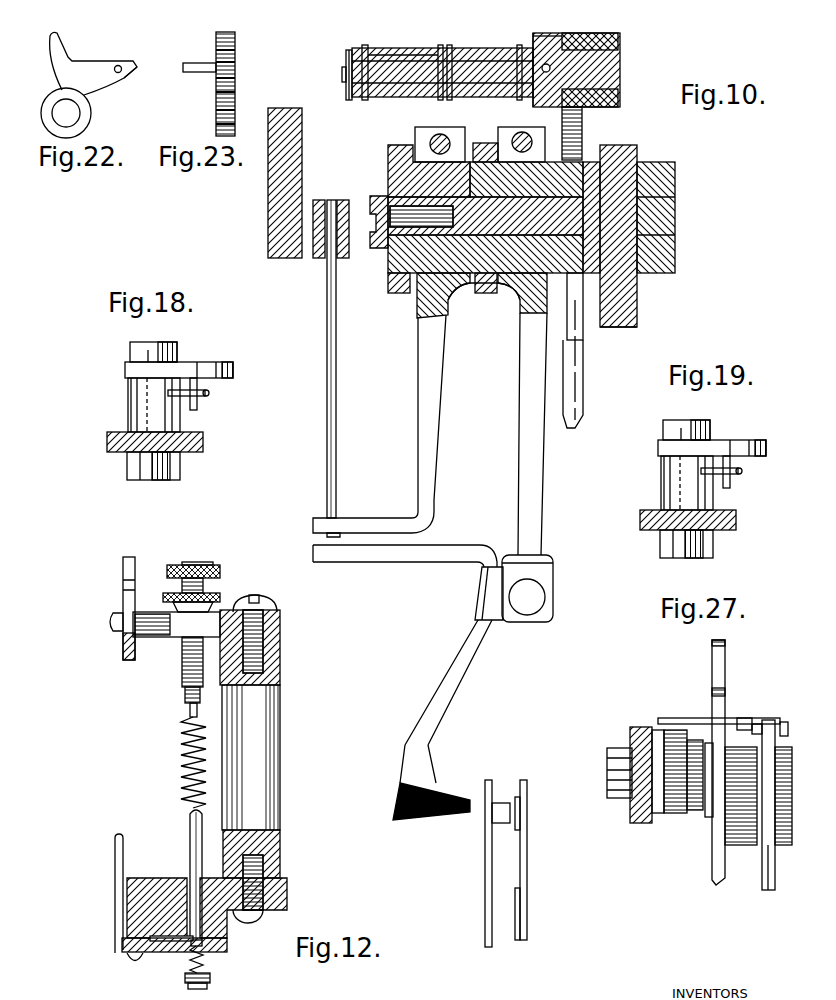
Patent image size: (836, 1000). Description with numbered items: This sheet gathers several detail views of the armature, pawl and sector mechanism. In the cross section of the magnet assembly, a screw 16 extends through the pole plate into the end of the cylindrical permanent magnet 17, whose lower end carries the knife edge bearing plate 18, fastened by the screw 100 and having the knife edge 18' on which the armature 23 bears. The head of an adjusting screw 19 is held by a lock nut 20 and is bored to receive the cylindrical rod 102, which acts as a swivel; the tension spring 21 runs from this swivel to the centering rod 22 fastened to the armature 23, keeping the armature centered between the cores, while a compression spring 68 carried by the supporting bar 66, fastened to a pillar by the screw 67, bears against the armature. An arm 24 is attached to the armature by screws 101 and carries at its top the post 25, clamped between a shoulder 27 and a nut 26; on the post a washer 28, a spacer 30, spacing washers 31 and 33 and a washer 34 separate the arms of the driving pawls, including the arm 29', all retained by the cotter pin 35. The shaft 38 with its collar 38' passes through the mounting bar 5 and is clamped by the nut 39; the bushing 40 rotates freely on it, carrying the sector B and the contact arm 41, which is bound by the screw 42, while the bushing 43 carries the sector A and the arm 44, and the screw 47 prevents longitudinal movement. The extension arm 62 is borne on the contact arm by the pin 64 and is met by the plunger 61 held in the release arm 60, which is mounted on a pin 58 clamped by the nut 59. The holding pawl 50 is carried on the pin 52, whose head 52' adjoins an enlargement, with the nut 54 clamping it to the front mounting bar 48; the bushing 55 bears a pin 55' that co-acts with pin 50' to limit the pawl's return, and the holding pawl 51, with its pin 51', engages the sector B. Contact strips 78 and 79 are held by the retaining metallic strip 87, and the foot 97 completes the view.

In FIG. 10, the mounting bar 5 is at (637, 326).
In FIG. 12, the screw 16 is at (268, 612).
In FIG. 12, the cylindrical permanent magnet 17 is at (280, 742).
In FIG. 12, the knife edge bearing plate 18 is at (206, 886).
In FIG. 12, the knife edge 18' is at (197, 940).
In FIG. 12, the head of adjusting screw 19 is at (220, 572).
In FIG. 12, the lock nut 20 is at (166, 612).
In FIG. 12, the tension spring 21 is at (184, 736).
In FIG. 12, the centering rod 22 is at (190, 834).
In FIG. 12, the armature 23 is at (226, 950).
In FIG. 10, the arm 24 is at (585, 397).
In FIG. 12, the arm 24 is at (115, 871).
In FIG. 10, the post 25 is at (617, 80).
In FIG. 10, the nut 26 is at (618, 43).
In FIG. 10, the shoulder 27 is at (553, 34).
In FIG. 10, the washer 28 is at (533, 33).
In FIG. 10, the arm of driving pawl 29 29' is at (521, 56).
In FIG. 10, the spacer 30 is at (489, 47).
In FIG. 10, the spacing washer 31 is at (457, 122).
In FIG. 10, the spacing washer 33 is at (388, 47).
In FIG. 10, the washer 34 is at (352, 48).
In FIG. 10, the cotter pin 35 is at (350, 100).
In FIG. 10, the shaft 38 is at (554, 216).
In FIG. 10, the collar 38' is at (620, 218).
In FIG. 10, the nut 39 is at (675, 170).
In FIG. 10, the bushing 40 is at (565, 278).
In FIG. 10, the contact arm 41 is at (546, 528).
In FIG. 10, the screw 42 is at (519, 132).
In FIG. 10, the bushing 43 is at (388, 286).
In FIG. 10, the arm 44 is at (418, 450).
In FIG. 10, the screw 47 is at (376, 248).
In FIG. 10, the front mounting bar 48 is at (305, 180).
In FIG. 18, the front mounting bar 48 is at (204, 447).
In FIG. 19, the front mounting bar 48 is at (708, 525).
In FIG. 27, the front mounting bar 48 is at (632, 738).
In FIG. 18, the holding pawl 50 is at (196, 359).
In FIG. 19, the holding pawl 50 is at (729, 437).
In FIG. 18, the pin 50' is at (219, 394).
In FIG. 19, the pin 50' is at (752, 472).
In FIG. 22, the holding pawl 51 is at (89, 85).
In FIG. 23, the holding pawl 51 is at (205, 84).
In FIG. 22, the pin 51' is at (151, 56).
In FIG. 23, the pin 51' is at (197, 61).
In FIG. 18, the pin 52 is at (137, 405).
In FIG. 19, the pin 52 is at (670, 483).
In FIG. 18, the head 52' is at (176, 342).
In FIG. 19, the head 52' is at (709, 420).
In FIG. 18, the nut 54 is at (178, 470).
In FIG. 19, the nut 54 is at (706, 550).
In FIG. 18, the bushing 55 is at (104, 405).
In FIG. 19, the bushing 55 is at (637, 483).
In FIG. 18, the pin 55' is at (208, 411).
In FIG. 19, the pin 55' is at (741, 489).
In FIG. 27, the pin 58 is at (694, 812).
In FIG. 27, the nut 59 is at (607, 784).
In FIG. 10, the release arm 60 is at (318, 248).
In FIG. 27, the release arm 60 is at (670, 814).
In FIG. 10, the plunger 61 is at (327, 430).
In FIG. 10, the extension arm 62 is at (420, 715).
In FIG. 10, the pin 64 is at (554, 606).
In FIG. 12, the supporting bar 66 is at (210, 982).
In FIG. 12, the screw 67 is at (209, 989).
In FIG. 12, the compression spring 68 is at (191, 962).
In FIG. 12, the contact strip 78 is at (528, 870).
In FIG. 12, the contact strip 79 is at (485, 876).
In FIG. 12, the retaining metallic strip 87 is at (518, 940).
In FIG. 10, the foot 97 is at (418, 822).
In FIG. 12, the screw 100 is at (262, 917).
In FIG. 12, the screws 101 is at (132, 962).
In FIG. 12, the cylindrical rod 102 is at (194, 562).
In FIG. 10, the sector A is at (410, 145).
In FIG. 27, the sector A is at (726, 670).
In FIG. 10, the sector B is at (485, 293).
In FIG. 27, the sector B is at (770, 728).